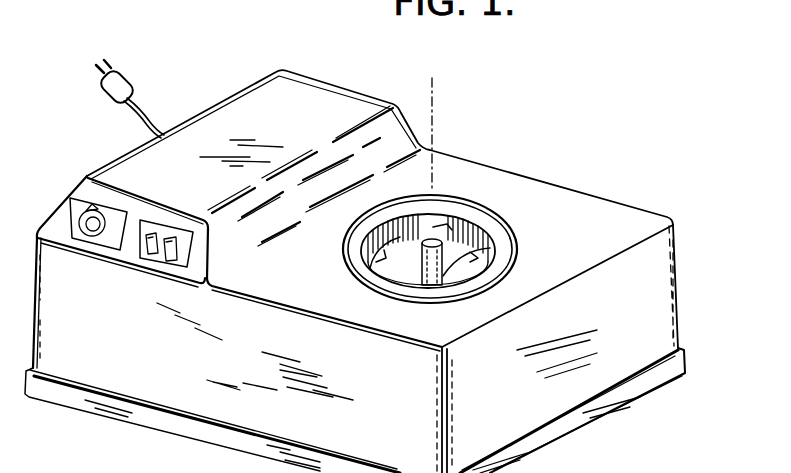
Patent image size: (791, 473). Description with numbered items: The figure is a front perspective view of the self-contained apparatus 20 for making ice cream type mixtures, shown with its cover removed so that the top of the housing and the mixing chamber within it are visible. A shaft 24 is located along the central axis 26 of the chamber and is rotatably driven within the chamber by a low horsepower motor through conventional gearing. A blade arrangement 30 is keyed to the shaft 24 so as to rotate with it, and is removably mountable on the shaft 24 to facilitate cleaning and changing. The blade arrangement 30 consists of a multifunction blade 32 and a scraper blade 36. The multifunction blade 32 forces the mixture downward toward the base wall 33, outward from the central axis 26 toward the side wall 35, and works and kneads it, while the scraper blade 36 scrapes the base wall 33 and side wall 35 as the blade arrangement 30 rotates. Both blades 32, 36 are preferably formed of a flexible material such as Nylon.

The self-contained apparatus 20 is at (617, 197).
The shaft 24 is at (449, 244).
The central axis 26 is at (438, 111).
The blade arrangement 30 is at (408, 274).
The multifunction blade 32 is at (469, 256).
The base wall 33 is at (367, 241).
The side wall 35 is at (444, 227).
The scraper blade 36 is at (382, 271).